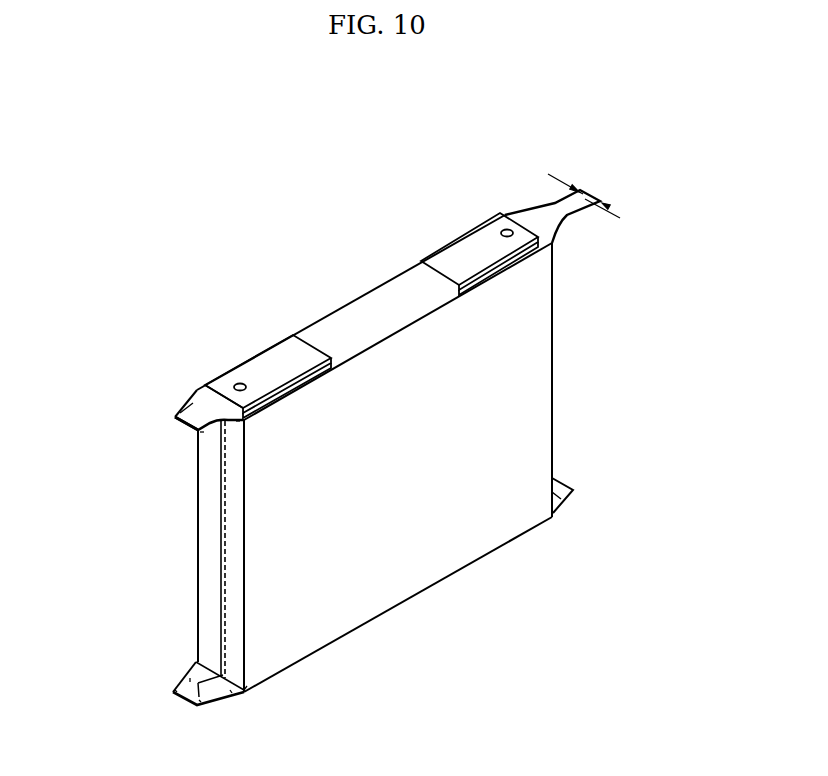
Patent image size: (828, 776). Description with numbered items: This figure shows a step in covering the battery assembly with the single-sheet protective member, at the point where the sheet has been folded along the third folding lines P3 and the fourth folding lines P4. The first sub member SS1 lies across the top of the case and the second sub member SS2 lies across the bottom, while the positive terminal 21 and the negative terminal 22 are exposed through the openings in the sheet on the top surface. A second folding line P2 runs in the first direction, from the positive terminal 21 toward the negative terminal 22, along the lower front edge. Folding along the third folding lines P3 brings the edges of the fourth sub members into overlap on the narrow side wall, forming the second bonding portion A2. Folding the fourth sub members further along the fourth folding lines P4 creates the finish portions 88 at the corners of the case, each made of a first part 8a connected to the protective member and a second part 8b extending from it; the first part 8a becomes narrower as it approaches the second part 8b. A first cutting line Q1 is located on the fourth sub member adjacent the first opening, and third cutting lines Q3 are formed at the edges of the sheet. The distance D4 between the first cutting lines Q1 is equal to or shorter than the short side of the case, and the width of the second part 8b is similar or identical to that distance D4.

The positive terminal 21 is at (268, 360).
The negative terminal 22 is at (460, 248).
The first sub member SS1 is at (355, 302).
The second sub member SS2 is at (425, 589).
The finish portion 88 is at (574, 241).
The first part 8a is at (200, 403).
The second part 8b is at (177, 417).
The distance between the first cutting lines D4 is at (584, 193).
The first cutting line Q1 is at (203, 433).
The third cutting line Q3 is at (175, 690).
The second folding line P2 is at (247, 685).
The third folding line P3 is at (198, 560).
The fourth folding line P4 is at (237, 424).
The second bonding portion A2 is at (221, 518).